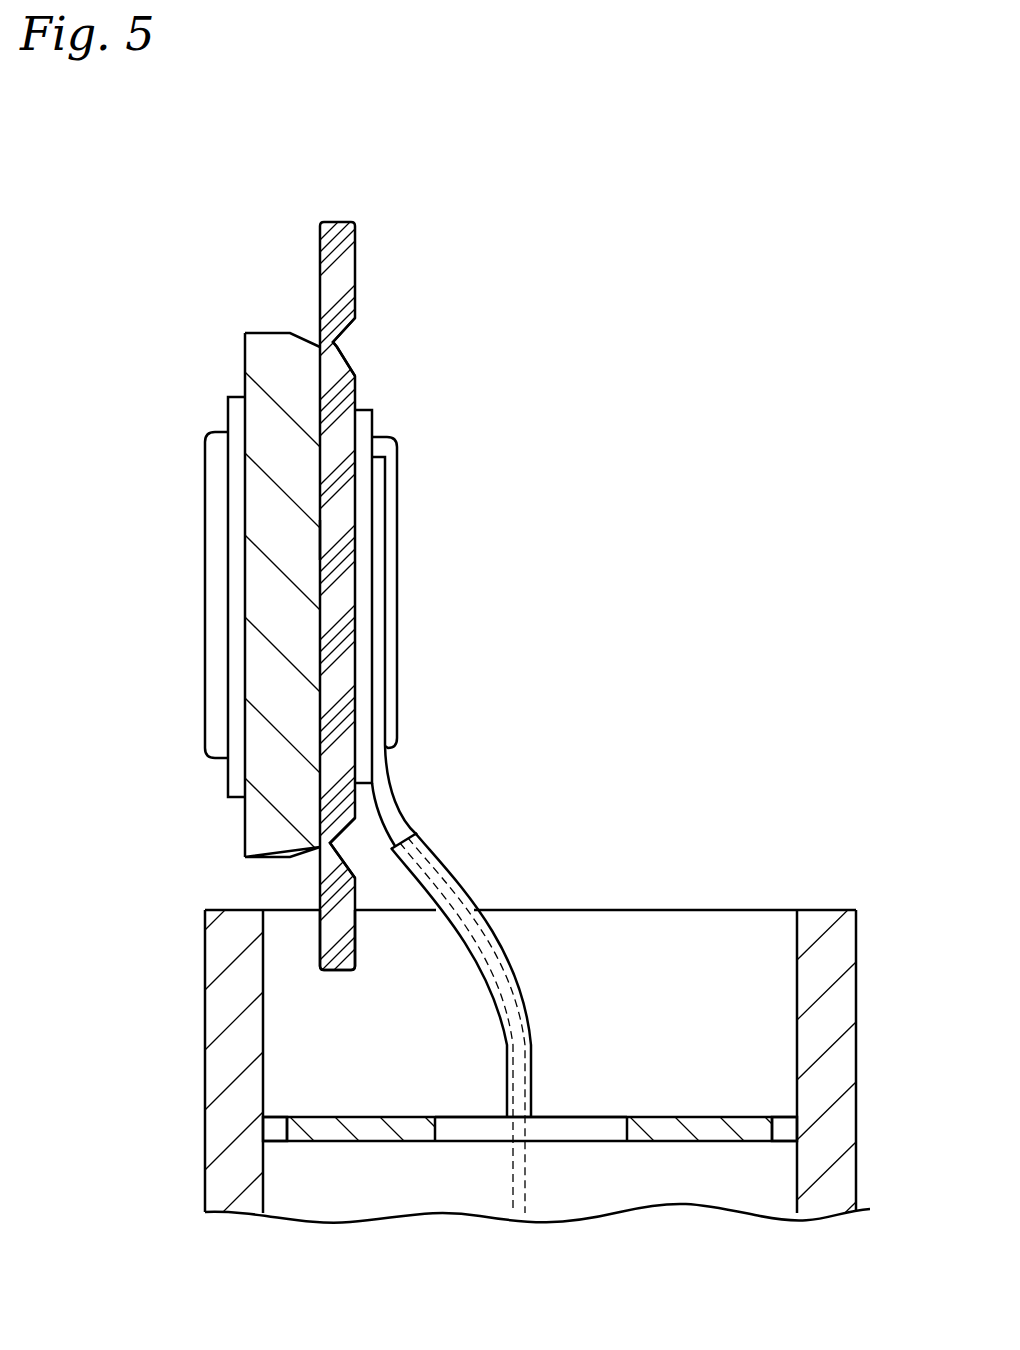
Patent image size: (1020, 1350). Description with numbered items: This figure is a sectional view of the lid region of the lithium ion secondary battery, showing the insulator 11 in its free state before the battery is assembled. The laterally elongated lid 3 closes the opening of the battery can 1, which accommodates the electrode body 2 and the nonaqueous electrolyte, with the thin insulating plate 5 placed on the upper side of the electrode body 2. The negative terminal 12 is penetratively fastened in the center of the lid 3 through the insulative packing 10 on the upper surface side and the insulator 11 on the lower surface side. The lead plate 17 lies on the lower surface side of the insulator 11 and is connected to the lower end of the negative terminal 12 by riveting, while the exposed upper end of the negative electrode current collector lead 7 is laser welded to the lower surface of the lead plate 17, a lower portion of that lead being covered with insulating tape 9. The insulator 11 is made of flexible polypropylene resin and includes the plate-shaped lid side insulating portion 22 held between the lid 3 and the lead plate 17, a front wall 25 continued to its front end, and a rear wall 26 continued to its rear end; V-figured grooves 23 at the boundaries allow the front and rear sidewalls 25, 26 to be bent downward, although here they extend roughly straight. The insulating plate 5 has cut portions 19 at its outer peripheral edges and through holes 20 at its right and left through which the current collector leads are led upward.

The battery can 1 is at (858, 1013).
The electrode body 2 is at (667, 1173).
The lid 3 is at (222, 368).
The insulating plate 5 is at (708, 1098).
The negative electrode current collector lead 7 is at (388, 778).
The insulating tape 9 is at (532, 1047).
The insulative packing 10 is at (228, 777).
The insulator 11 is at (351, 619).
The negative terminal 12 is at (213, 583).
The lead plate 17 is at (372, 420).
The cut portions 19 is at (283, 1126).
The through holes 20 is at (620, 1126).
The lid side insulating portion 22 is at (343, 538).
The V-figured grooves 23 is at (342, 343).
The front wall 25 is at (347, 933).
The rear wall 26 is at (348, 273).